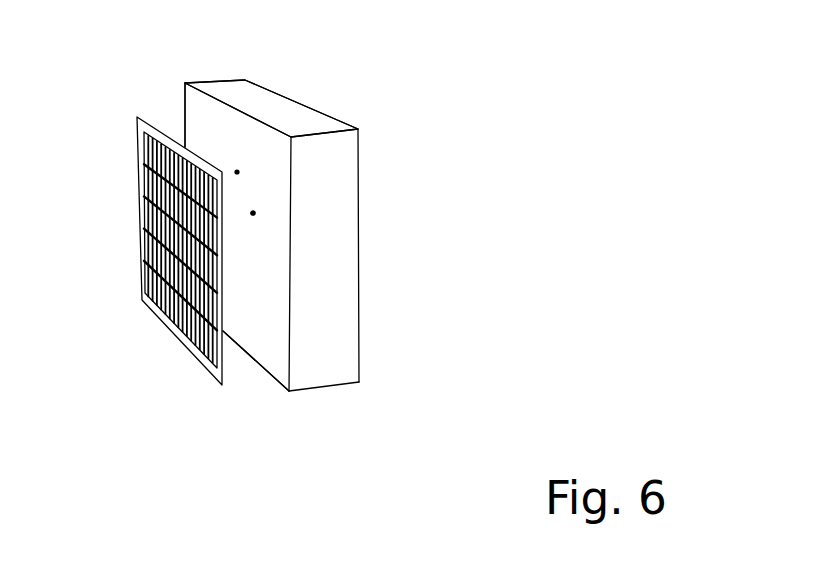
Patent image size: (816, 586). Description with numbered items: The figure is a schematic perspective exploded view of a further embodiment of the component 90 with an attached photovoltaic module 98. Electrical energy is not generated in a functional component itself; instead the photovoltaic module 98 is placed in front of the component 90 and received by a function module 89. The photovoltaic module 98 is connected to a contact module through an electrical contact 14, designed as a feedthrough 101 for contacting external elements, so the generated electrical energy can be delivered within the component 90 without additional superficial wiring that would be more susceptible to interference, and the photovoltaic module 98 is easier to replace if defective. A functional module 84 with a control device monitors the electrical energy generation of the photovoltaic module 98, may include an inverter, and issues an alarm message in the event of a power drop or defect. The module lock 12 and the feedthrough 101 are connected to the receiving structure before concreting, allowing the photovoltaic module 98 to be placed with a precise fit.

The module lock 12 is at (238, 170).
The electrical contact 14 is at (254, 211).
The feedthrough 101 is at (254, 211).
The functional module with control device 84 is at (180, 72).
The function module for receiving a photovoltaic module 89 is at (247, 380).
The component 90 is at (345, 200).
The photovoltaic module 98 is at (140, 153).